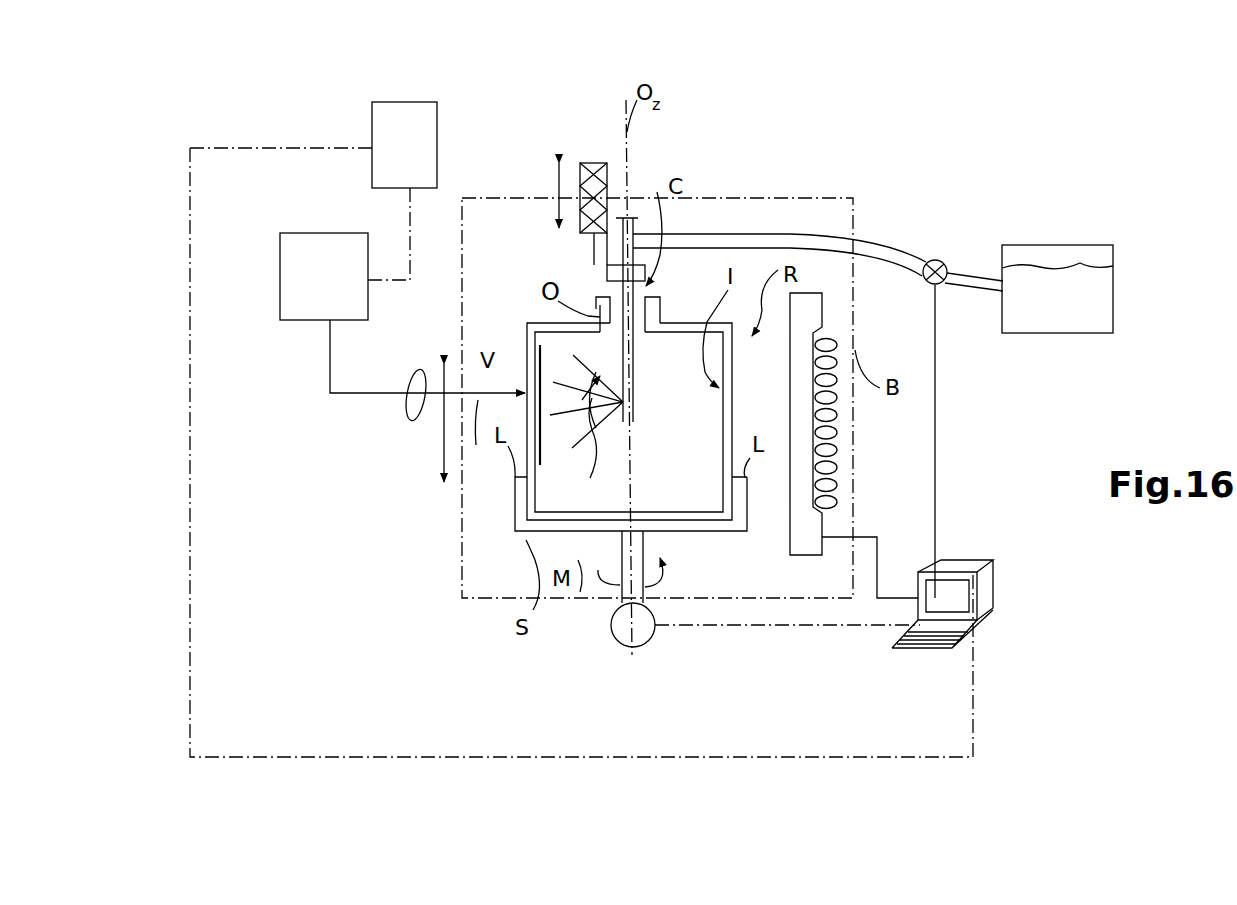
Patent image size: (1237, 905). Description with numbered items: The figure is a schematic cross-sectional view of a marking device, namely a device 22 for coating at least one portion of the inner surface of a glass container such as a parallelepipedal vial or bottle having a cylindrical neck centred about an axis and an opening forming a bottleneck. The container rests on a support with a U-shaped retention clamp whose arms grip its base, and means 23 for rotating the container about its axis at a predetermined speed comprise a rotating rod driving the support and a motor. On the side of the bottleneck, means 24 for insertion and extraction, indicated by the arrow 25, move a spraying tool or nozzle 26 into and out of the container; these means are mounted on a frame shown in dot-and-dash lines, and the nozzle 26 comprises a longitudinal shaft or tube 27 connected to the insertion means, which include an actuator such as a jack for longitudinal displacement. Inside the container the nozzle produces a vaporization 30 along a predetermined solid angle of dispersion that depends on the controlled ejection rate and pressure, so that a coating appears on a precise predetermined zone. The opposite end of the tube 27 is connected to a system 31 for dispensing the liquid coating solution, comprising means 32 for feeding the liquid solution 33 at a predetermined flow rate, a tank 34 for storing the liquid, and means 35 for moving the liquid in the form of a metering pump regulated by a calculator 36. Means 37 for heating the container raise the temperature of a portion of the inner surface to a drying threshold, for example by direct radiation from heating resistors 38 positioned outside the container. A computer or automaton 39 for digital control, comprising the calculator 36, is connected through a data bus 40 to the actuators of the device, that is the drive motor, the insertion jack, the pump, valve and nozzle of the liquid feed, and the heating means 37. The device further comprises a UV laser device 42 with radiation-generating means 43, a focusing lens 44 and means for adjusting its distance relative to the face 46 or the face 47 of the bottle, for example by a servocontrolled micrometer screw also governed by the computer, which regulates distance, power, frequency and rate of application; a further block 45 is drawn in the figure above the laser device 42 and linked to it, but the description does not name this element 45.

The device for coating 22 is at (734, 238).
The means for rotating the container 23 is at (578, 152).
The means for insertion/extraction 24 is at (590, 268).
The arrow of insertion/extraction 25 is at (559, 205).
The spraying tool or nozzle 26 is at (640, 376).
The longitudinal shaft or tube 27 is at (620, 360).
The vaporization 30 is at (618, 405).
The system for dispensing a liquid coating solution 31 is at (958, 246).
The means for feeding the liquid 32 is at (963, 302).
The liquid solution 33 is at (1072, 293).
The tank 34 is at (1115, 292).
The means for moving the liquid 35 is at (932, 260).
The calculator 36 is at (985, 600).
The means for heating the container 37 is at (815, 565).
The heating resistors 38 is at (830, 420).
The computer or automaton 39 is at (972, 546).
The data bus 40 is at (937, 420).
The UV laser device 42 is at (305, 262).
The radiation-generating means 43 is at (358, 402).
The focusing lens 44 is at (402, 416).
The control unit 45 is at (402, 108).
The face of the bottle 46 is at (531, 433).
The face of the bottle 47 is at (727, 487).